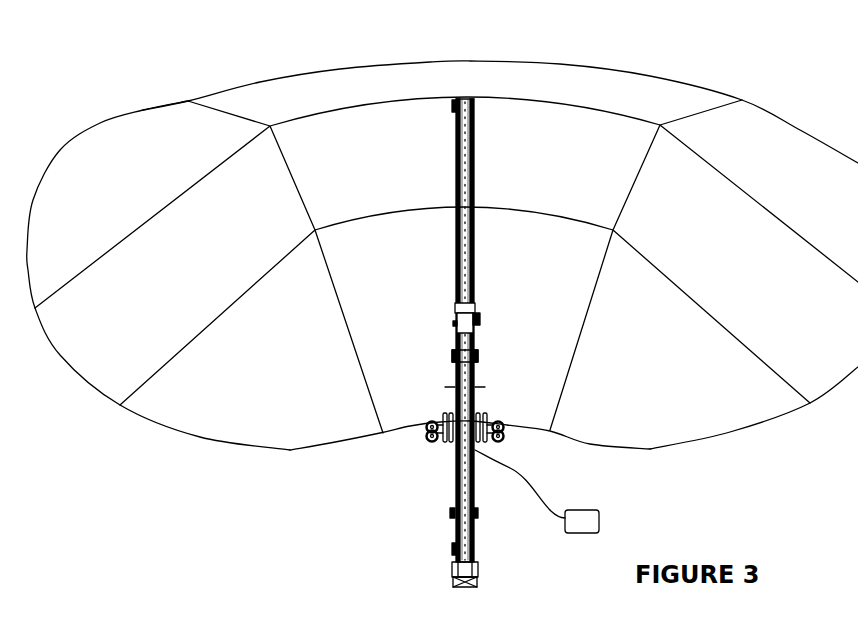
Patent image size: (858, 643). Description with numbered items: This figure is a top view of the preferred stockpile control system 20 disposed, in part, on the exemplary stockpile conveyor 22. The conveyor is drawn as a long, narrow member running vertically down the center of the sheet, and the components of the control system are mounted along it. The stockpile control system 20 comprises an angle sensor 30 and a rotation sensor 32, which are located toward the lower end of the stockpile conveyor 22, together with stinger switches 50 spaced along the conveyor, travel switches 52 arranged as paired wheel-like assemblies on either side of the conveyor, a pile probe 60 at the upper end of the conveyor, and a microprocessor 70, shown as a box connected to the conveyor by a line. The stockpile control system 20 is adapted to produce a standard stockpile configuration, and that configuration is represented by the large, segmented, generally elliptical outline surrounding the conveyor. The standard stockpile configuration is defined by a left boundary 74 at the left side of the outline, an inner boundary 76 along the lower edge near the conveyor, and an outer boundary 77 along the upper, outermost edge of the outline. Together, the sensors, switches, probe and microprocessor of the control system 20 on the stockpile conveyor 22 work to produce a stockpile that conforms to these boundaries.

The stockpile control system 20 is at (466, 334).
The stockpile conveyor 22 is at (455, 470).
The angle sensor 30 is at (477, 527).
The rotation sensor 32 is at (465, 583).
The stinger switches 50 is at (476, 326).
The travel switches 52 is at (425, 432).
The pile probe 60 is at (452, 100).
The microprocessor 70 is at (600, 521).
The left boundary 74 is at (35, 308).
The inner boundary 76 is at (405, 425).
The outer boundary 77 is at (510, 62).